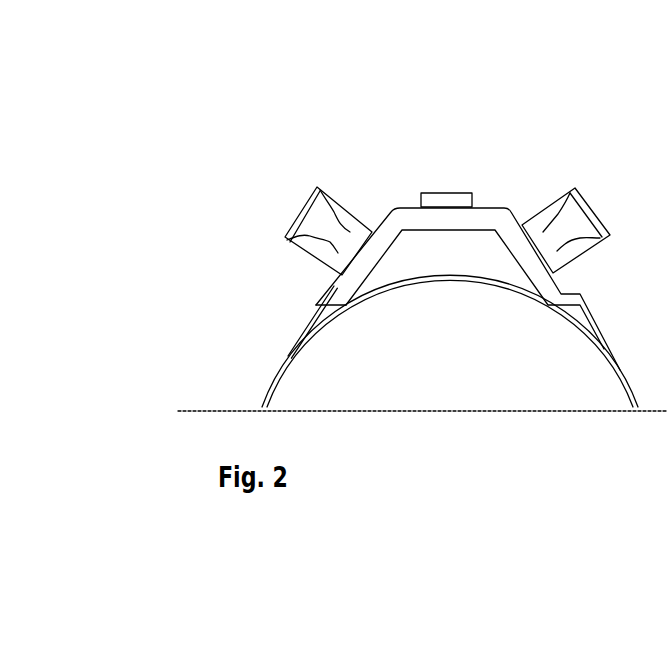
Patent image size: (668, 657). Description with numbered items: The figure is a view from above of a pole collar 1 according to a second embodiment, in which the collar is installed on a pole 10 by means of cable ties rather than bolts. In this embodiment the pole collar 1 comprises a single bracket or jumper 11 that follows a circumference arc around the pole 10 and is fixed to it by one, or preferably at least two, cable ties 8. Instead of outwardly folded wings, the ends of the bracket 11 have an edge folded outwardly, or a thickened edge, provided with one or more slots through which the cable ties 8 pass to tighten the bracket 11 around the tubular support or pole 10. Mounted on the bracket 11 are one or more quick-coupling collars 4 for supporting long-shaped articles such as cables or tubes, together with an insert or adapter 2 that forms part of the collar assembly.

The pole collar 1 is at (364, 194).
The insert or adapter 2 is at (453, 194).
The quick-coupling collar 4 is at (322, 187).
The cable tie 8 is at (291, 347).
The pole 10 is at (440, 285).
The bracket or jumper 11 is at (392, 203).